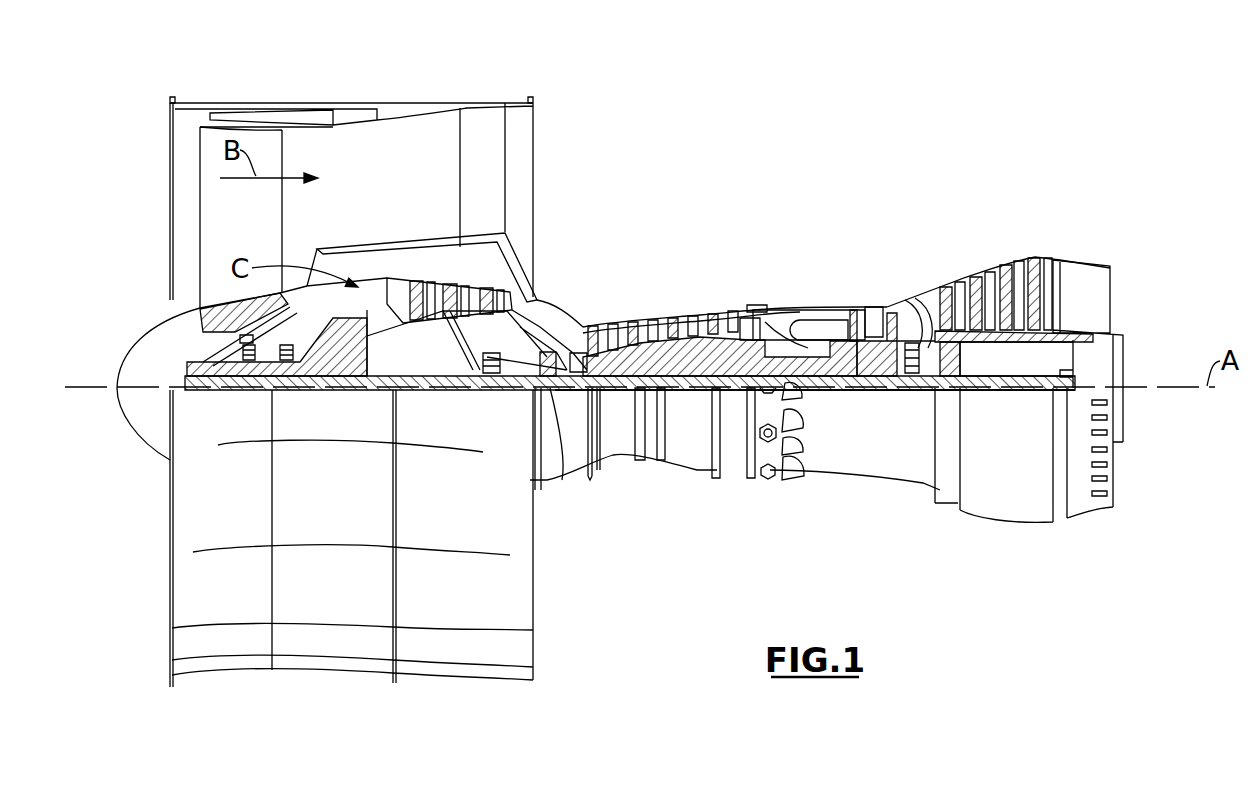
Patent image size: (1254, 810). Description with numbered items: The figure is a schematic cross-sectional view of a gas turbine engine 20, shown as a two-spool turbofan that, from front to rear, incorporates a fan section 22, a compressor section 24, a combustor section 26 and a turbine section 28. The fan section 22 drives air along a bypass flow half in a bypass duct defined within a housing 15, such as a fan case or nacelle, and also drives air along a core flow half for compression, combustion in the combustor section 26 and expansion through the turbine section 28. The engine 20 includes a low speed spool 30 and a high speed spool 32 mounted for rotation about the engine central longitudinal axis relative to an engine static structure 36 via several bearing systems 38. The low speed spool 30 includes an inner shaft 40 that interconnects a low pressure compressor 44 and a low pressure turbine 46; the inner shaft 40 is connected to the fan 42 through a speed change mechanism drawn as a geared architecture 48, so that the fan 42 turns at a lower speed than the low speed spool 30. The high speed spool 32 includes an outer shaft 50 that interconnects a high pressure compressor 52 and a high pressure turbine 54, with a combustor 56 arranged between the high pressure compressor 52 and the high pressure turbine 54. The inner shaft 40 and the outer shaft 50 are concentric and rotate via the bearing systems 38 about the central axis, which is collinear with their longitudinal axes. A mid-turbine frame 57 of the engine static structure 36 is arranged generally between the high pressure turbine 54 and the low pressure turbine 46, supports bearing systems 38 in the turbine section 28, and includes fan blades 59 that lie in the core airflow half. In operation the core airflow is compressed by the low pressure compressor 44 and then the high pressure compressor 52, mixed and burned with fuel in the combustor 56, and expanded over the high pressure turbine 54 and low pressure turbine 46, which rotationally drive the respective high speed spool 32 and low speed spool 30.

The housing 15 is at (353, 106).
The gas turbine engine 20 is at (814, 152).
The fan section 22 is at (281, 93).
The compressor section 24 is at (582, 288).
The combustor section 26 is at (808, 272).
The turbine section 28 is at (956, 242).
The low speed spool 30 is at (693, 404).
The high speed spool 32 is at (733, 318).
The engine static structure 36 is at (733, 488).
The bearing systems 38 is at (492, 374).
The inner shaft 40 is at (562, 480).
The fan 42 is at (255, 231).
The low pressure compressor 44 is at (458, 295).
The low pressure turbine 46 is at (1000, 283).
The geared architecture 48 is at (358, 376).
The outer shaft 50 is at (818, 383).
The high pressure compressor 52 is at (662, 325).
The high pressure turbine 54 is at (873, 306).
The combustor 56 is at (808, 330).
The mid-turbine frame 57 is at (920, 290).
The fan blades 59 is at (923, 328).